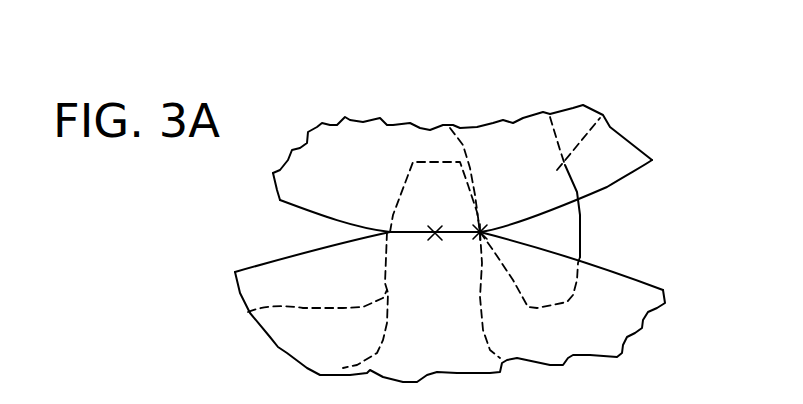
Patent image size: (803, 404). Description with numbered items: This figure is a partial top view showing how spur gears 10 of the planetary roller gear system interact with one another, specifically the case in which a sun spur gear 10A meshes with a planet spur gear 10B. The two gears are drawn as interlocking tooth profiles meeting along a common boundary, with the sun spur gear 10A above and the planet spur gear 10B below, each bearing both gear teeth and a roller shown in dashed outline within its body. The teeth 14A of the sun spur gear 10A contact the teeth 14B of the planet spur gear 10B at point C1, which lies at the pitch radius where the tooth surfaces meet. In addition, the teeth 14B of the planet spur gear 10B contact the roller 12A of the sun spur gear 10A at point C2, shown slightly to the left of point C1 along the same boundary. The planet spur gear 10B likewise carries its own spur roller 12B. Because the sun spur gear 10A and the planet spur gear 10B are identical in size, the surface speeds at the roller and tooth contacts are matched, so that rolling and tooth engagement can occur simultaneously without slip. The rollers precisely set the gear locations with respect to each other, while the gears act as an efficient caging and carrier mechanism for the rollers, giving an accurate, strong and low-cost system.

The spur gear 10 is at (607, 182).
The sun spur gear 10A is at (491, 134).
The planet spur gear 10B is at (453, 307).
The roller of sun spur gear 12A is at (338, 147).
The spur roller 12B is at (627, 270).
The teeth of sun spur gear 14A is at (600, 118).
The teeth of planet spur gear 14B is at (248, 312).
The contact point C1 is at (481, 230).
The contact point C2 is at (435, 225).